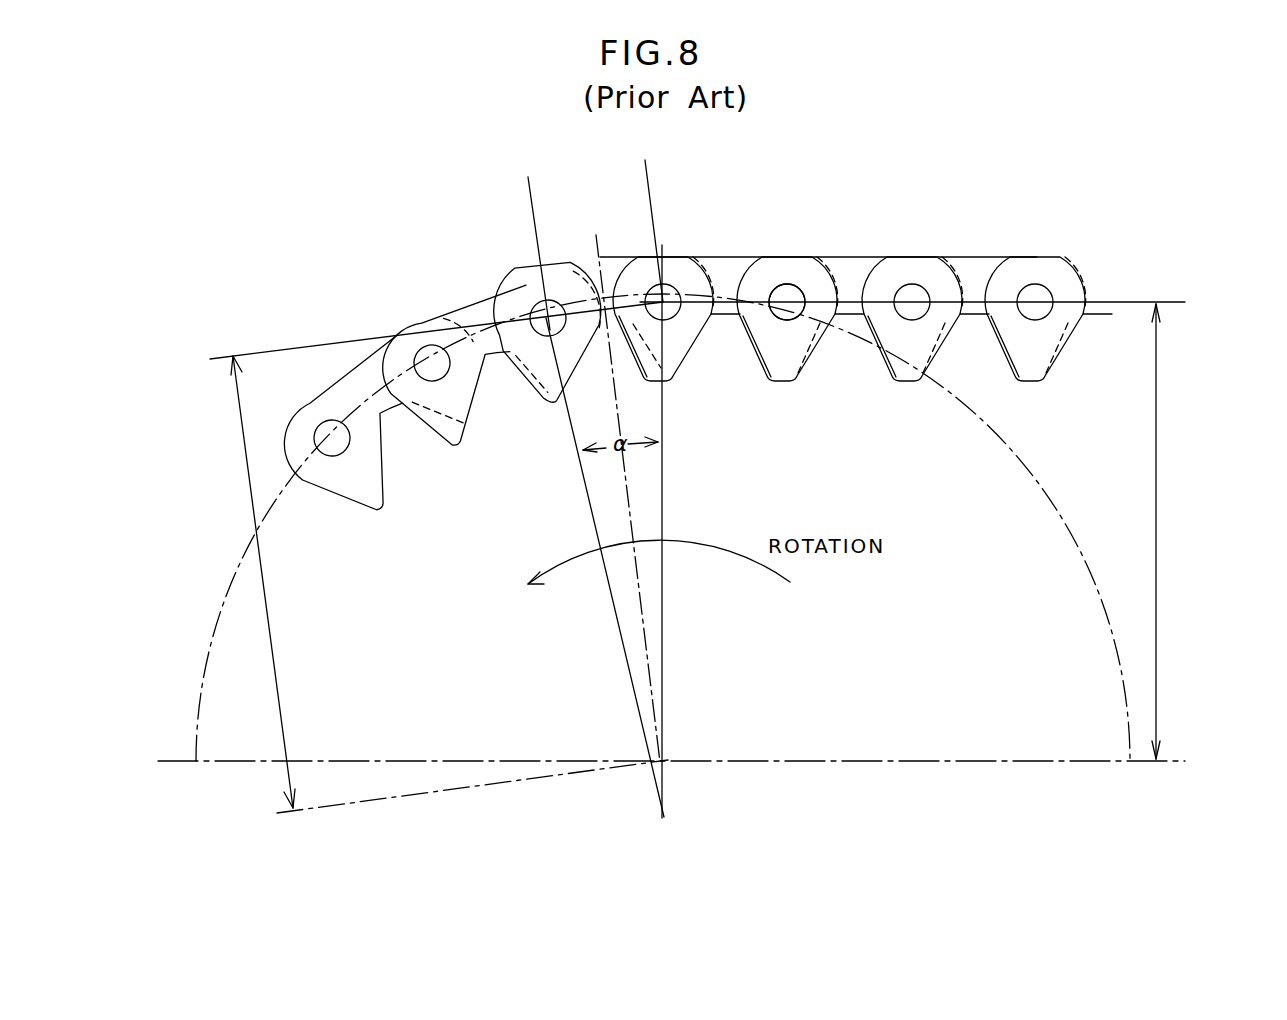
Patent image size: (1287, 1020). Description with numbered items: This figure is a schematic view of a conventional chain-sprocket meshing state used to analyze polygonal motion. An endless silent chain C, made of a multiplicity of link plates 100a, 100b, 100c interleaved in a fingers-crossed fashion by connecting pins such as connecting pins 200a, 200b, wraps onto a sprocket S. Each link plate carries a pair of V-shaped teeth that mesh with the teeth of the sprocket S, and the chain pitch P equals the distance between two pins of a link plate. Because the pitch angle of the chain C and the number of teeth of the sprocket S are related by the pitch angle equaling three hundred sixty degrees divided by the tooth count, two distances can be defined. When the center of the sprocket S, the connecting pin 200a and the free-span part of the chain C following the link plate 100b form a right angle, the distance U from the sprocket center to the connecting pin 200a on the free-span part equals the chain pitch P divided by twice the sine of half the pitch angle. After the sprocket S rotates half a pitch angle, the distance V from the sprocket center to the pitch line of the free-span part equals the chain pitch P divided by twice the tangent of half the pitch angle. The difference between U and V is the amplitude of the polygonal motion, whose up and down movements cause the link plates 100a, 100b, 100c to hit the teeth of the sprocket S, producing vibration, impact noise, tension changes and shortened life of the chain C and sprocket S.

The link plate 100a is at (577, 272).
The link plate 100b is at (728, 268).
The link plate 100c is at (850, 268).
The connecting pin 200a is at (676, 293).
The connecting pin 200b is at (789, 287).
The silent chain C is at (689, 353).
The sprocket S is at (934, 677).
The chain pitch P is at (646, 172).
The distance from sprocket center to connecting pin U is at (1162, 531).
The distance from sprocket center to pitch line of free-span part V is at (254, 582).